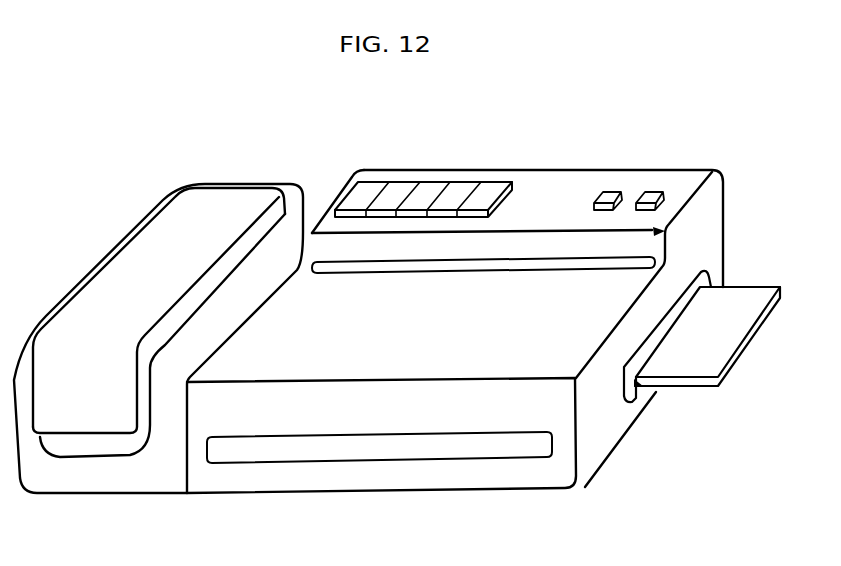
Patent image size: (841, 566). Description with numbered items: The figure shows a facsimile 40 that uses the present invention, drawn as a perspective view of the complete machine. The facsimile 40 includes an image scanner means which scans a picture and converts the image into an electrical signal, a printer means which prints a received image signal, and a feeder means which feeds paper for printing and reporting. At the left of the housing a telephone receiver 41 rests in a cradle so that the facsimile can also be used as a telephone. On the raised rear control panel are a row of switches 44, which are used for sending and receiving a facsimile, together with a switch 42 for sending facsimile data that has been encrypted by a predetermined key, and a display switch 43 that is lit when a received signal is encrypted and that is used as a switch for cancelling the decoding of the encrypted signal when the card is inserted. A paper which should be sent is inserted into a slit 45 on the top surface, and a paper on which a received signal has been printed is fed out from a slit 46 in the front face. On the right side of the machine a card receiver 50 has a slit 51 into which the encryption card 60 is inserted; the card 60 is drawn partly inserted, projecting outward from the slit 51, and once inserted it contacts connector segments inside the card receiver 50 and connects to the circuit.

The facsimile 40 is at (619, 449).
The telephone receiver 41 is at (219, 217).
The switch 42 is at (651, 192).
The display switch 43 is at (603, 192).
The switches 44 is at (348, 158).
The slit 45 is at (543, 268).
The slit 46 is at (312, 445).
The card receiver 50 is at (705, 273).
The slit 51 is at (641, 389).
The encription card 60 is at (710, 337).